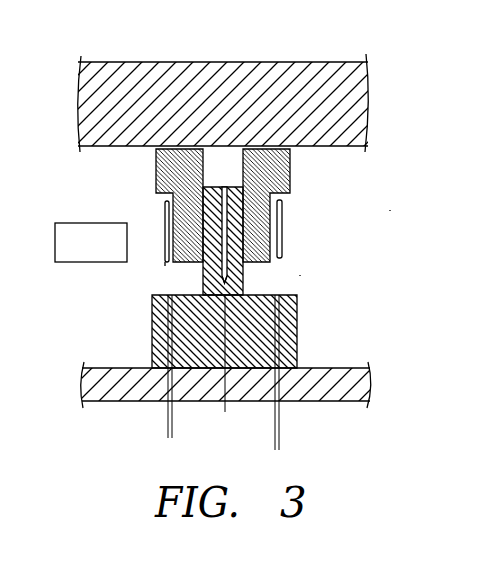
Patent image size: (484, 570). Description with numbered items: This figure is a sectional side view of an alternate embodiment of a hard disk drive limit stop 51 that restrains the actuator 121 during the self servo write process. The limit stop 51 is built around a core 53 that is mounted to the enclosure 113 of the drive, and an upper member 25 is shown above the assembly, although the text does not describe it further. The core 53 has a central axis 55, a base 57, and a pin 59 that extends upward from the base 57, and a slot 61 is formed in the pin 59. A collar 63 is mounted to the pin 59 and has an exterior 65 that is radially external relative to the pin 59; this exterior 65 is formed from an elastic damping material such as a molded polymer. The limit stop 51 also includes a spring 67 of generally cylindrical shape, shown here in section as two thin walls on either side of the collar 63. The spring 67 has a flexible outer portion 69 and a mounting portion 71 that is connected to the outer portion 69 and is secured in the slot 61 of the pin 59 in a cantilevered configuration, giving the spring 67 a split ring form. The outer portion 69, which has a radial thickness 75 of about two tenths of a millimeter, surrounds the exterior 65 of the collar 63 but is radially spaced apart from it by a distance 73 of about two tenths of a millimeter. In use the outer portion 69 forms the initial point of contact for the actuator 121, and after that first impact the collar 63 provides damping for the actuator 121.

The upper support plate 25 is at (352, 62).
The limit stop 51 is at (398, 205).
The core 53 is at (308, 269).
The central axis 55 is at (218, 165).
The base 57 is at (299, 320).
The pin 59 is at (203, 275).
The slot 61 is at (226, 187).
The collar 63 is at (291, 165).
The exterior 65 is at (290, 219).
The spring 67 is at (150, 208).
The flexible outer portion 69 is at (152, 257).
The mounting portion 71 is at (224, 283).
The distance 73 is at (305, 447).
The radial thickness 75 is at (208, 431).
The enclosure 113 is at (343, 368).
The actuator 121 is at (97, 222).